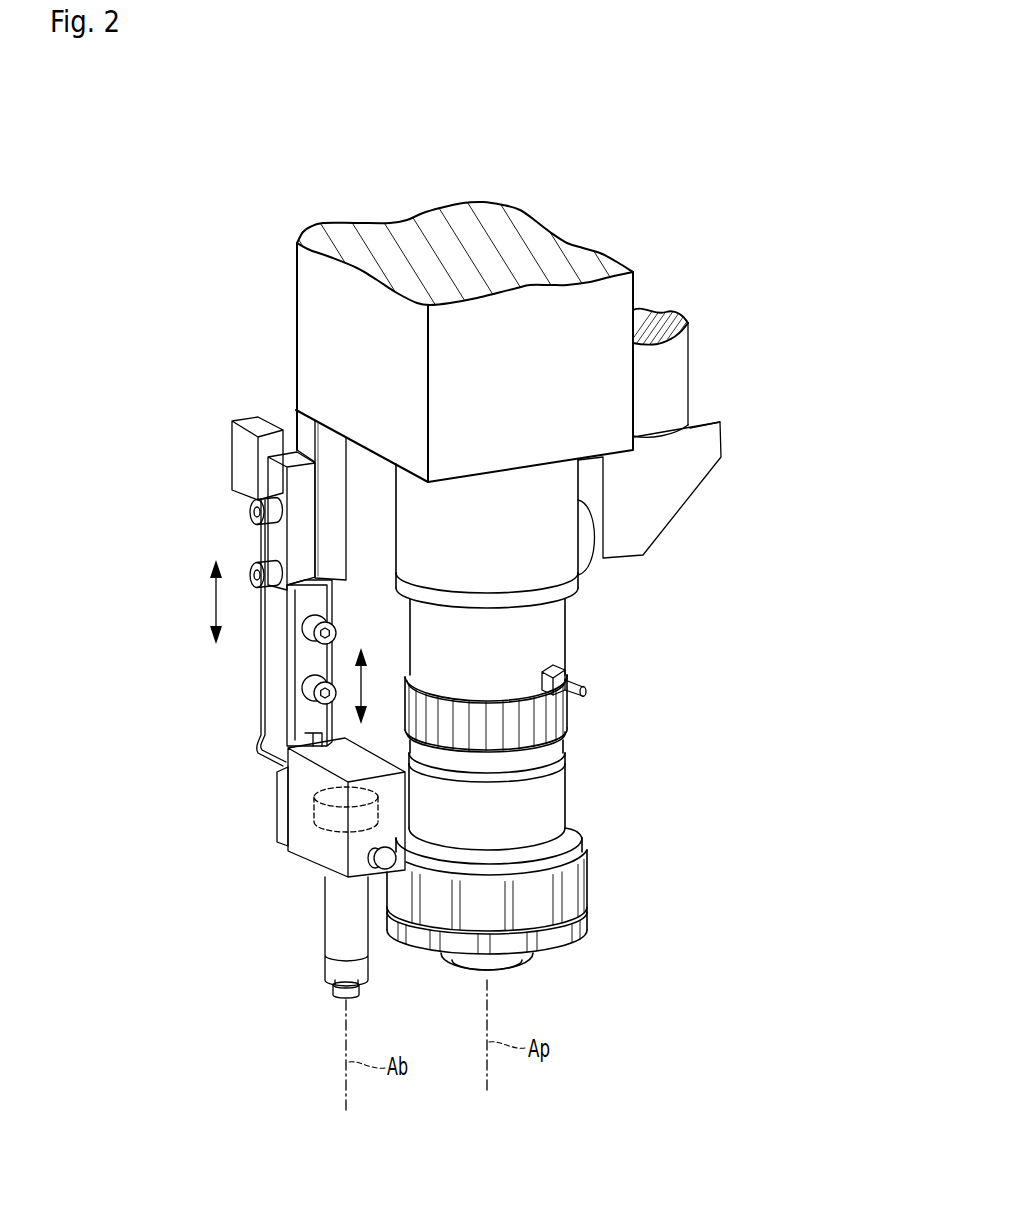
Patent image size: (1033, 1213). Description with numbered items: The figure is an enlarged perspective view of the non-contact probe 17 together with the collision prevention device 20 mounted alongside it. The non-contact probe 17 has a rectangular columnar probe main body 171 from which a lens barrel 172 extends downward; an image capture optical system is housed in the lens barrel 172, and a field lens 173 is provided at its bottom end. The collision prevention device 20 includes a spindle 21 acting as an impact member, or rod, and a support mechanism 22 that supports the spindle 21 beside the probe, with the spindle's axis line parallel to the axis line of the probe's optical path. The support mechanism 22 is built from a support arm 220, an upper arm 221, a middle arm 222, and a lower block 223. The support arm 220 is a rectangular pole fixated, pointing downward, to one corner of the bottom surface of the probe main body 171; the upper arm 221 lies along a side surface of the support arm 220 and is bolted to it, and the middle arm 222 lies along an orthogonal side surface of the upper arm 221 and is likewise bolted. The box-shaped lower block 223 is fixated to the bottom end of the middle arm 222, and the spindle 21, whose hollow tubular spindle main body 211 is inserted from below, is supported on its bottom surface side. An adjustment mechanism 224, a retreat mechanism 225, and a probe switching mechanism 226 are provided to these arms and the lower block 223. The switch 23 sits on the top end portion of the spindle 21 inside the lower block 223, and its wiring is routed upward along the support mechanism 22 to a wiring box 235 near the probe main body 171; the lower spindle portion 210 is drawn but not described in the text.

The non-contact probe 17 is at (683, 248).
The probe main body 171 is at (612, 372).
The lens barrel 172 is at (560, 713).
The field lens 173 is at (583, 927).
The collision prevention device 20 is at (188, 424).
The support arm 220 is at (332, 440).
The wiring box 235 is at (250, 417).
The support mechanism 22 is at (135, 503).
The upper arm 221 is at (273, 538).
The adjustment mechanism 224 is at (229, 542).
The middle arm 222 is at (290, 674).
The retreat mechanism 225 is at (231, 699).
The probe switching mechanism 226 is at (258, 795).
The lower block 223 is at (303, 853).
The switch 23 is at (317, 795).
The spindle 21 is at (280, 950).
The probe body 210 is at (338, 925).
The spindle main body 211 is at (308, 1001).